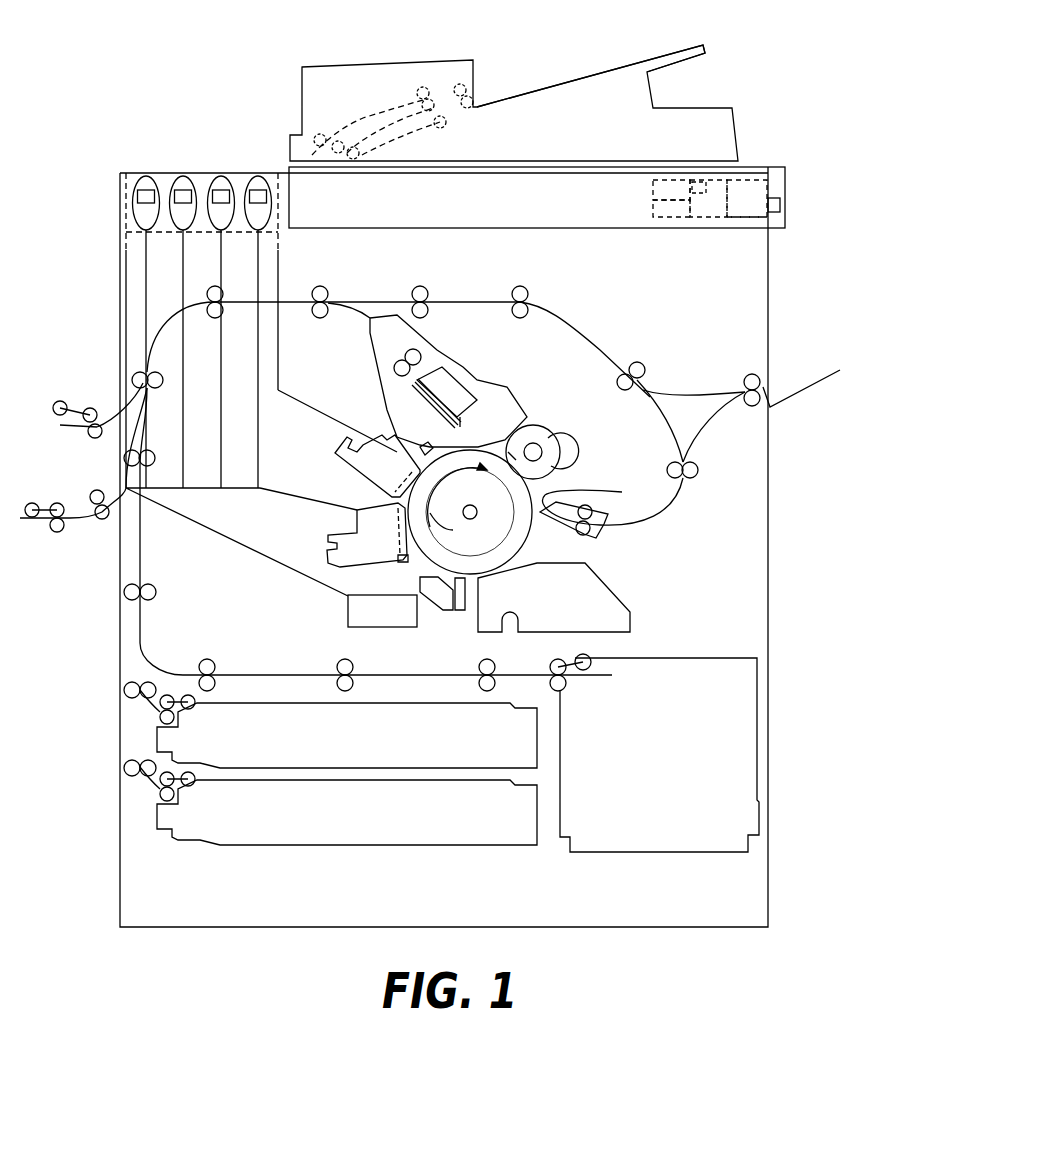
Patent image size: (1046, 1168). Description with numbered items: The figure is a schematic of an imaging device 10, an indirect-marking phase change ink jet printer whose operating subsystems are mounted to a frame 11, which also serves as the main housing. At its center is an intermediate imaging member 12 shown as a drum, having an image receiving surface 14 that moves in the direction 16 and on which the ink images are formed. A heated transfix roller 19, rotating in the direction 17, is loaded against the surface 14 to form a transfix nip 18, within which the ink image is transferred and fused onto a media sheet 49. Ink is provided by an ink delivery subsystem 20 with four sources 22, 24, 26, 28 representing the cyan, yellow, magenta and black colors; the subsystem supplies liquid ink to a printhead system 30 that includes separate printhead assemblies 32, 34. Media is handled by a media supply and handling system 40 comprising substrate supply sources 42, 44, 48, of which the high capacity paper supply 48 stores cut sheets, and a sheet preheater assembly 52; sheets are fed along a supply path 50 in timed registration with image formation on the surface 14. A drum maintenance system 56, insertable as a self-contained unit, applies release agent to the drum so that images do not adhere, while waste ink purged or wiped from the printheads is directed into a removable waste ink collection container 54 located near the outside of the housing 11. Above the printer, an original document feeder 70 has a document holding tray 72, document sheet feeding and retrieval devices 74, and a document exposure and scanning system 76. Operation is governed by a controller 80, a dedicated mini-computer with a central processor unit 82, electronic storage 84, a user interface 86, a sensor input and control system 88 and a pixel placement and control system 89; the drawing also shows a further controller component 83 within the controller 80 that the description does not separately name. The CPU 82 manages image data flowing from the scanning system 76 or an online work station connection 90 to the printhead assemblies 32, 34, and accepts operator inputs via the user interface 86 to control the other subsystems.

The imaging device 10 is at (205, 98).
The frame 11 is at (770, 588).
The intermediate imaging member 12 is at (538, 540).
The image receiving surface 14 is at (428, 562).
The direction of surface movement 16 is at (470, 529).
The rotation direction of transfix roller 17 is at (518, 447).
The transfix nip 18 is at (535, 483).
The heated transfix roller 19 is at (551, 434).
The ink delivery subsystem 20 is at (126, 172).
The ink source 22 is at (147, 177).
The ink source 24 is at (184, 177).
The ink source 26 is at (222, 177).
The ink source 28 is at (258, 177).
The printhead system 30 is at (326, 490).
The printhead assembly 32 is at (373, 474).
The printhead assembly 34 is at (361, 547).
The media supply and handling system 40 is at (434, 863).
The substrate supply source 42 is at (334, 752).
The substrate supply source 44 is at (334, 827).
The high capacity paper supply 48 is at (650, 769).
The media sheet 49 is at (604, 494).
The supply path 50 is at (142, 624).
The sheet preheater assembly 52 is at (462, 365).
The waste ink collection container 54 is at (383, 624).
The drum maintenance system 56 is at (592, 600).
The original document feeder 70 is at (393, 62).
The document holding tray 72 is at (686, 48).
The document sheet feeding and retrieval devices 74 is at (382, 106).
The document exposure and scanning system 76 is at (474, 175).
The controller 80 is at (692, 235).
The central processor unit 82 is at (767, 180).
The sensor element 83 is at (696, 172).
The electronic storage 84 is at (748, 225).
The user interface 86 is at (722, 180).
The sensor input and control system 88 is at (668, 189).
The pixel placement and control system 89 is at (668, 212).
The work station connection 90 is at (781, 204).